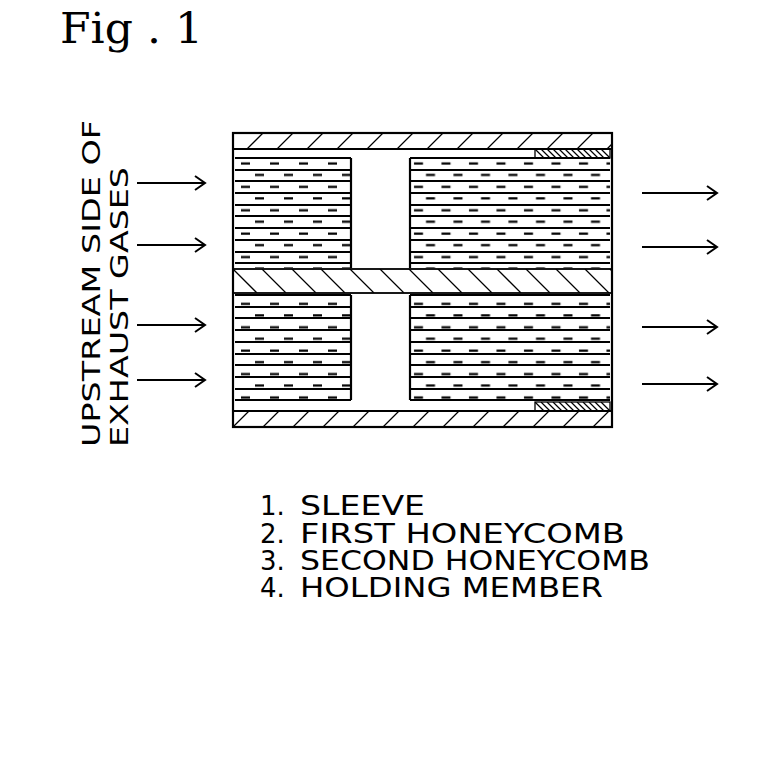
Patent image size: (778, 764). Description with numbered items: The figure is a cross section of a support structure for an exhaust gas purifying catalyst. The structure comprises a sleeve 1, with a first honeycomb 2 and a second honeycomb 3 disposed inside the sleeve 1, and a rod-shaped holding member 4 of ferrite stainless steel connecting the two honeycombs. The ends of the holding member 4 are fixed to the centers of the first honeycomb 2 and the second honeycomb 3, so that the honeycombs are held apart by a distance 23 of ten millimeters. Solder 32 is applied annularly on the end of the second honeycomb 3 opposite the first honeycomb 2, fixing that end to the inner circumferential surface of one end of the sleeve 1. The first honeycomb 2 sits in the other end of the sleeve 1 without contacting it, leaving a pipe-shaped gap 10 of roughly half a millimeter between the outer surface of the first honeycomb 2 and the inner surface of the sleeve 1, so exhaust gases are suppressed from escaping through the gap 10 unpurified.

The sleeve 1 is at (406, 133).
The first honeycomb 2 is at (282, 373).
The second honeycomb 3 is at (502, 370).
The holding member 4 is at (380, 293).
The gap 10 is at (250, 150).
The distance 23 is at (384, 212).
The solder 32 is at (587, 147).